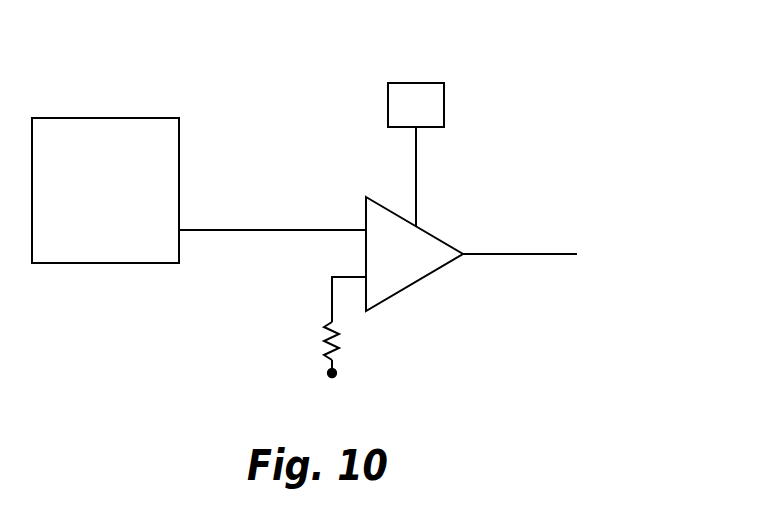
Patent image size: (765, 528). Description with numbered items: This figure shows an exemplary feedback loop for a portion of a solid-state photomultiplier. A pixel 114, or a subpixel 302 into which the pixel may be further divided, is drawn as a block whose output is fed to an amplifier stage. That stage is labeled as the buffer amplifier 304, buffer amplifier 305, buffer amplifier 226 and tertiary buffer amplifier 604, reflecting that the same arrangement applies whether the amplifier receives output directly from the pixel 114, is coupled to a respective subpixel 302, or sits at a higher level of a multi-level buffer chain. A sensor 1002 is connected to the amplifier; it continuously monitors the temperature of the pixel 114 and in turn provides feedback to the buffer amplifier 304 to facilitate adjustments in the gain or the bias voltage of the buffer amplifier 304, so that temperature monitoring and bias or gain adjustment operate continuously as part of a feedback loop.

The pixel 114 is at (152, 163).
The subpixel 302 is at (176, 117).
The sensor 1002 is at (407, 77).
The buffer amplifier 304 is at (500, 260).
The amplifier 305 is at (500, 260).
The buffer amplifier 226 is at (500, 260).
The tertiary buffer amplifier 604 is at (415, 285).